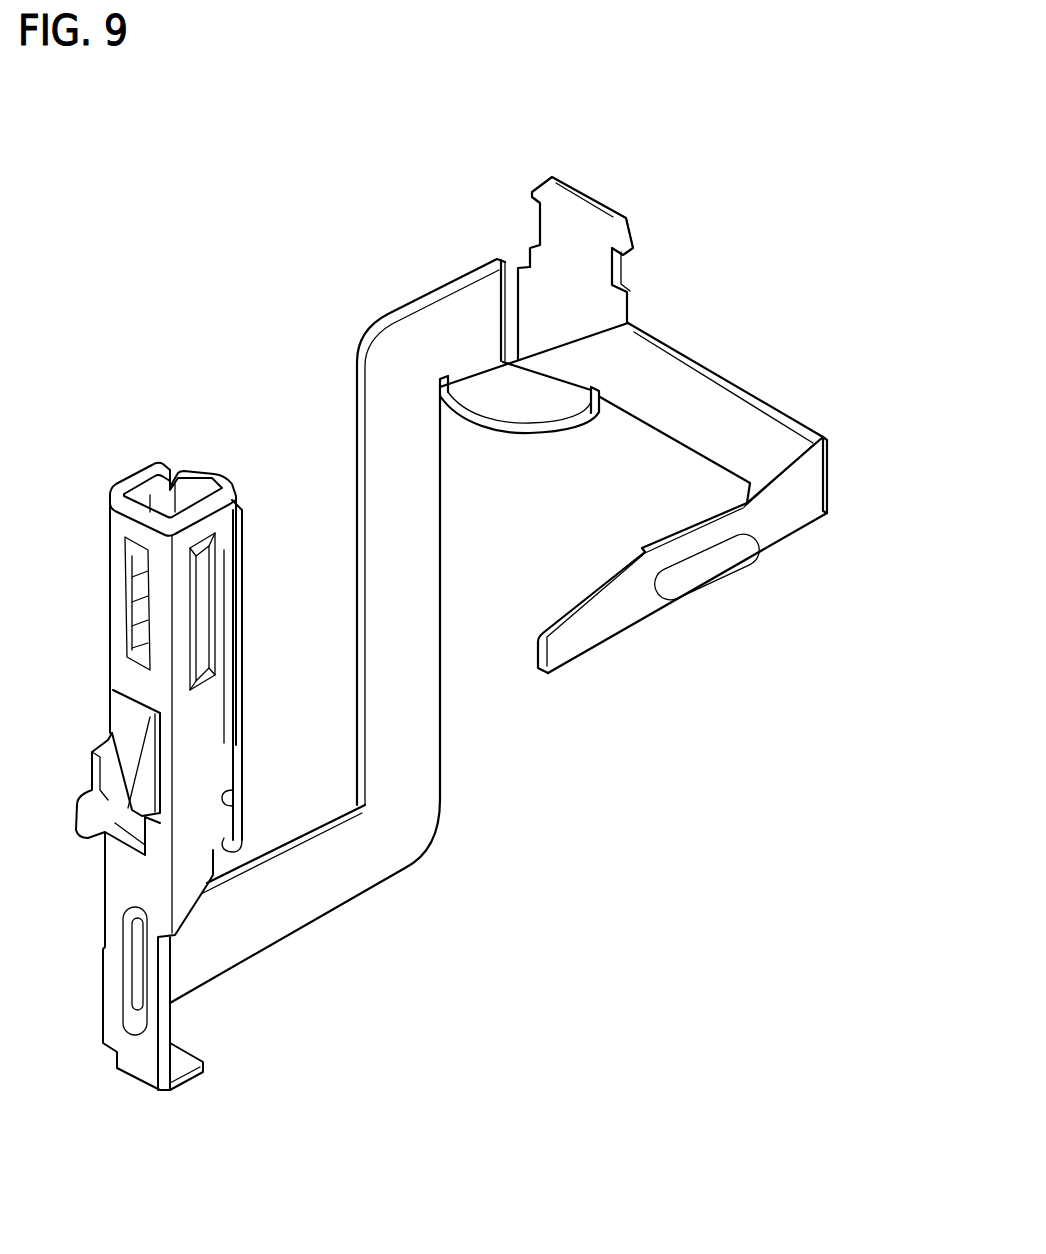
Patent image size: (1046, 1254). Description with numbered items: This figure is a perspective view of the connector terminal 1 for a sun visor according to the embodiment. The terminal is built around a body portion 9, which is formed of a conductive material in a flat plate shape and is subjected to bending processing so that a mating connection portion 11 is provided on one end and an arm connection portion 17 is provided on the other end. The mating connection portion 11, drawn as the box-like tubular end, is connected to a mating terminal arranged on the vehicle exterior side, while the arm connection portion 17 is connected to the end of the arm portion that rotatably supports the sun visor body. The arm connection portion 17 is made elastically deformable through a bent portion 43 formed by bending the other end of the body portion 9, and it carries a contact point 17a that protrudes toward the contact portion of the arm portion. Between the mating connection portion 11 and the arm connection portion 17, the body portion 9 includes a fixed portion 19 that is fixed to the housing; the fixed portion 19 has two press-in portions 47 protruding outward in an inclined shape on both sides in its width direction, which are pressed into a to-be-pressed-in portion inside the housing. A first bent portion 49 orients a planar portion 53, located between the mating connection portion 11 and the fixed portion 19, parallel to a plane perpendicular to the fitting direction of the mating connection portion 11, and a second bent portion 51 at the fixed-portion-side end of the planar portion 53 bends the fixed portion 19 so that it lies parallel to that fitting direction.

The connector terminal for a sun visor 1 is at (755, 168).
The body portion 9 is at (452, 800).
The mating connection portion 11 is at (137, 465).
The arm connection portion 17 is at (647, 640).
The contact point 17a is at (696, 572).
The fixed portion 19 is at (593, 178).
The bent portion 43 is at (831, 472).
The press-in portion 47 is at (537, 200).
The first bent portion 49 is at (490, 362).
The second bent portion 51 is at (558, 382).
The planar portion 53 is at (524, 410).